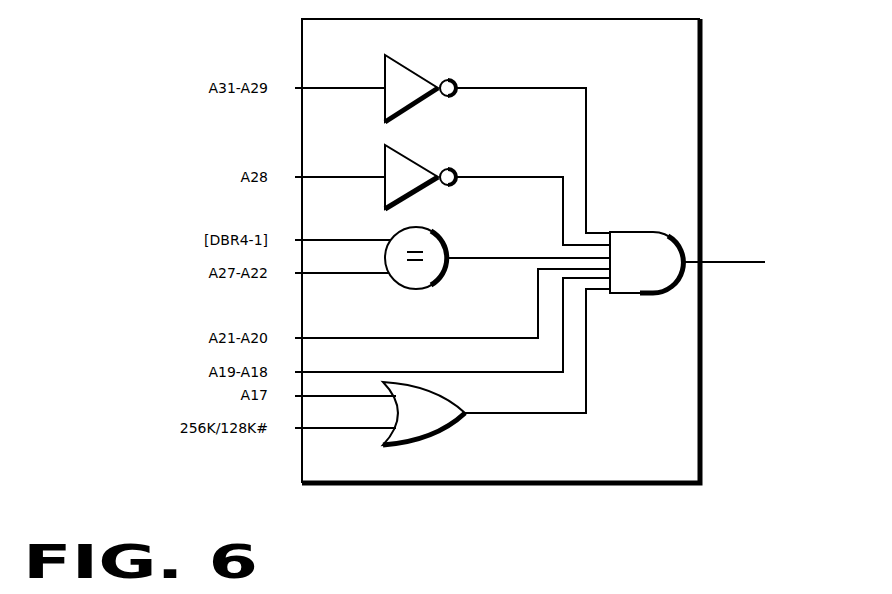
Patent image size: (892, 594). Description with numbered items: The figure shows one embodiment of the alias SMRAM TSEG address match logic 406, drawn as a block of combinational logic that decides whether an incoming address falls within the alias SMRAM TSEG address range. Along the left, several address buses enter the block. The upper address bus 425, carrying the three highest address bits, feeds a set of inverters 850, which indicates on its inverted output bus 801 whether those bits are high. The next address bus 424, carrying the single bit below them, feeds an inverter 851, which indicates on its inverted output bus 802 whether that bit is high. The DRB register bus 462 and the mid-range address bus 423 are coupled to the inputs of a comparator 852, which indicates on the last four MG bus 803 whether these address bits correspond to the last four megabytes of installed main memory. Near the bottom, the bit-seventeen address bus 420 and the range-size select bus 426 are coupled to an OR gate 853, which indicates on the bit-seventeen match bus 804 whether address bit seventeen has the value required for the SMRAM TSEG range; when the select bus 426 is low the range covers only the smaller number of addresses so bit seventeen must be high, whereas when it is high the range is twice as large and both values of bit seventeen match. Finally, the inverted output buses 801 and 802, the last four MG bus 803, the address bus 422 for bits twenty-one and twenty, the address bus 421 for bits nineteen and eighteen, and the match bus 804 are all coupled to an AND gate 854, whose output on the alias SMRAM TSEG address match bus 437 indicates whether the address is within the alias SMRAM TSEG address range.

The alias SMRAM TSEG address match logic 406 is at (688, 477).
The A31–A29 bus 425 is at (311, 88).
The A28 bus 424 is at (311, 177).
The [DRB4-1] bus 462 is at (311, 240).
The A27–A22 bus 423 is at (311, 273).
The A21–A20 bus 422 is at (311, 338).
The A19–A18 bus 421 is at (311, 372).
The A17 bus 420 is at (311, 396).
The 256K/128K# bus 426 is at (310, 430).
The set of inverters 850 is at (418, 97).
The inverter 851 is at (418, 185).
The comparator 852 is at (428, 284).
The OR gate 853 is at (440, 422).
The AND gate 854 is at (652, 271).
The A31–A29# bus 801 is at (503, 88).
The A28# bus 802 is at (503, 177).
The last 4 MG bus 803 is at (493, 258).
The A17 match bus 804 is at (493, 413).
The alias SMRAM TSEG address match bus 437 is at (728, 262).